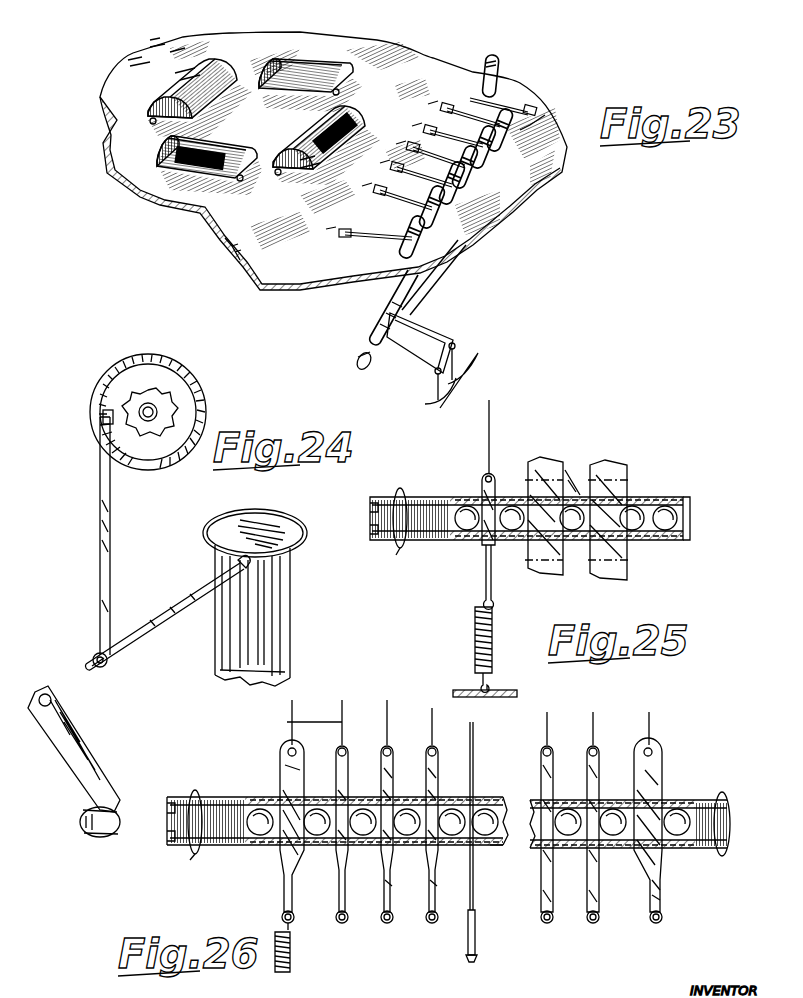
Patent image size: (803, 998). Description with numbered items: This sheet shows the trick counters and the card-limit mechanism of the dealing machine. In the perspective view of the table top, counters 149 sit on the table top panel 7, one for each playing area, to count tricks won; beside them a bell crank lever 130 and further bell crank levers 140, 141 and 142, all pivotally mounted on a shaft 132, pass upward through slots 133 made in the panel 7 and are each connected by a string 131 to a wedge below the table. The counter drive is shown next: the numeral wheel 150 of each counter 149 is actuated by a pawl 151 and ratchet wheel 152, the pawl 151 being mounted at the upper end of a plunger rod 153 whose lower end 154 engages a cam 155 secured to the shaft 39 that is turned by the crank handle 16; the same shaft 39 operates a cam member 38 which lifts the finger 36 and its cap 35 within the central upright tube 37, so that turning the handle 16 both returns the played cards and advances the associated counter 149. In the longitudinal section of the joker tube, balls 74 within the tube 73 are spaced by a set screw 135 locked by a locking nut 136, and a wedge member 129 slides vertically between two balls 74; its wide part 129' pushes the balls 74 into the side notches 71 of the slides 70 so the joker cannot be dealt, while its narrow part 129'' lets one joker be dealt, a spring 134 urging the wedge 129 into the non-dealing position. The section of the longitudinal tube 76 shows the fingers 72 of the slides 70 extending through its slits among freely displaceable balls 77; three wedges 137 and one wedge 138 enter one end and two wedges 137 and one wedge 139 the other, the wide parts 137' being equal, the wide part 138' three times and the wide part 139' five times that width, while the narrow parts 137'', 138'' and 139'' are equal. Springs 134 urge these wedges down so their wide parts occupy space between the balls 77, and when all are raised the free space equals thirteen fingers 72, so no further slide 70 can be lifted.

In FIG. 23, the table top panel 7 is at (505, 178).
In FIG. 23, the counter 149 is at (172, 102).
In FIG. 23, the bell crank lever 130 is at (492, 85).
In FIG. 23, the slot 133 is at (500, 103).
In FIG. 23, the bell crank lever 142 is at (545, 115).
In FIG. 23, the bell crank lever 140 is at (412, 290).
In FIG. 23, the bell crank lever 141 is at (405, 310).
In FIG. 23, the string 131 is at (444, 360).
In FIG. 25, the string 131 is at (489, 428).
In FIG. 26, the string 131 is at (448, 722).
In FIG. 23, the shaft 132 is at (360, 368).
In FIG. 24, the numeral wheel 150 is at (185, 380).
In FIG. 24, the pawl 151 is at (104, 420).
In FIG. 24, the ratchet wheel 152 is at (150, 440).
In FIG. 24, the plunger rod 153 is at (100, 528).
In FIG. 24, the lower end of plunger rod 154 is at (104, 654).
In FIG. 24, the cam 155 is at (106, 666).
In FIG. 24, the cap 35 is at (262, 526).
In FIG. 24, the finger 36 is at (285, 668).
In FIG. 24, the central upright tube 37 is at (258, 600).
In FIG. 24, the cam member 38 is at (238, 568).
In FIG. 24, the shaft 39 is at (156, 627).
In FIG. 24, the crank handle 16 is at (70, 743).
In FIG. 25, the set screw 135 is at (420, 497).
In FIG. 26, the set screw 135 is at (212, 800).
In FIG. 25, the locking nut 136 is at (395, 556).
In FIG. 26, the locking nut 136 is at (190, 852).
In FIG. 25, the ball 74 is at (678, 518).
In FIG. 25, the tube 73 is at (672, 498).
In FIG. 25, the slide 70 is at (545, 560).
In FIG. 26, the slide 70 is at (476, 958).
In FIG. 25, the side notch 71 is at (572, 505).
In FIG. 25, the wedge member 129 is at (506, 476).
In FIG. 25, the wide part of wedge 129' is at (520, 507).
In FIG. 25, the narrow part of wedge 129'' is at (467, 593).
In FIG. 25, the spring 134 is at (493, 655).
In FIG. 26, the spring 134 is at (291, 948).
In FIG. 26, the ball 77 is at (486, 815).
In FIG. 26, the longitudinal tube 76 is at (498, 848).
In FIG. 26, the wedge 138 is at (262, 826).
In FIG. 26, the wide part of wedge 138' is at (267, 775).
In FIG. 26, the narrow part of wedge 138'' is at (259, 906).
In FIG. 26, the wedge 137 is at (364, 834).
In FIG. 26, the wide part of wedge 137' is at (410, 750).
In FIG. 26, the narrow part of wedge 137'' is at (411, 889).
In FIG. 26, the finger 72 is at (468, 890).
In FIG. 26, the wedge 139 is at (601, 830).
In FIG. 26, the wide part of wedge 139' is at (680, 767).
In FIG. 26, the narrow part of wedge 139'' is at (685, 894).